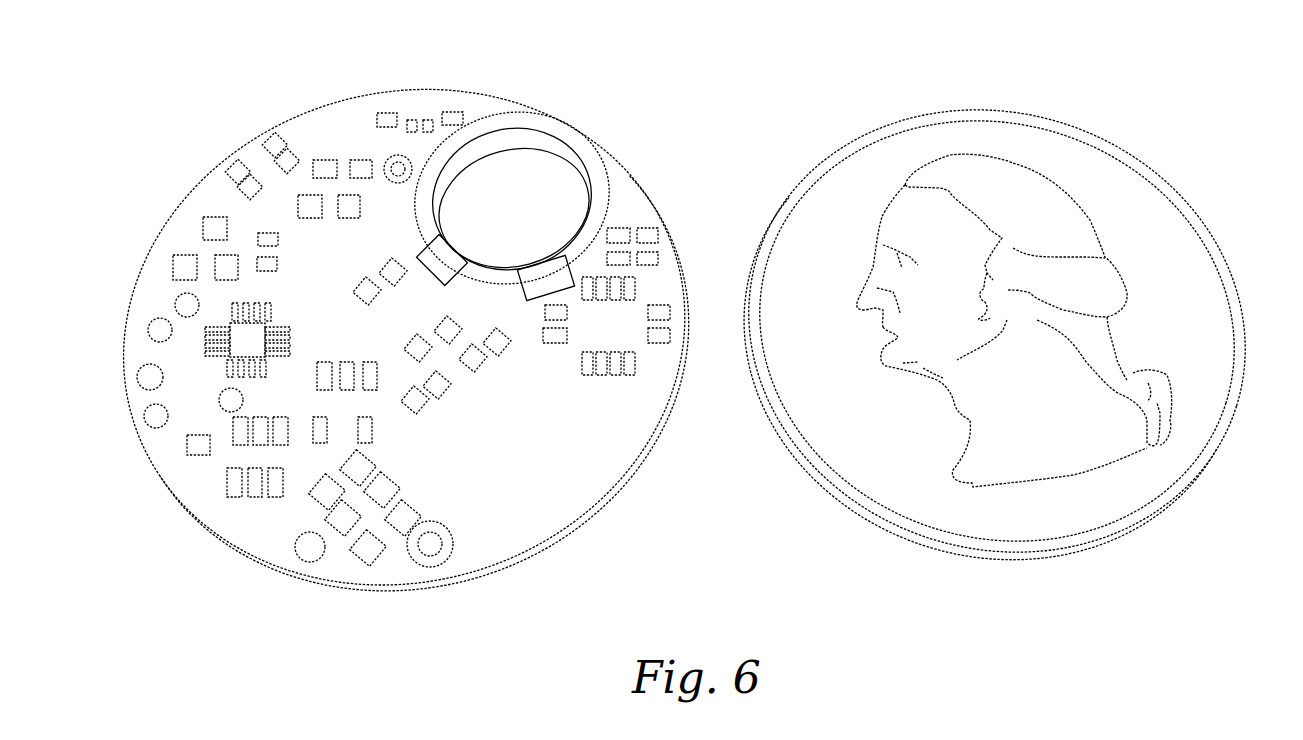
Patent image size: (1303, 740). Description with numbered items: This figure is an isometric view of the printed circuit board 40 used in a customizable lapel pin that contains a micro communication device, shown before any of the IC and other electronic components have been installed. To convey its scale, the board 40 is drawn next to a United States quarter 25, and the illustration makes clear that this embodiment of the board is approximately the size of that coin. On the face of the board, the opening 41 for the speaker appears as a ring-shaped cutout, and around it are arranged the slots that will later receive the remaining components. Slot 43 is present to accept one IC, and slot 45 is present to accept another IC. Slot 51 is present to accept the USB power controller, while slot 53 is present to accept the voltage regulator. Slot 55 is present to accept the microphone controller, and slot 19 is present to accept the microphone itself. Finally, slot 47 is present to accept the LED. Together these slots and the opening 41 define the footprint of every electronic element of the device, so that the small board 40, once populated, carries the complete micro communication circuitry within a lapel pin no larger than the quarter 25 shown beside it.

The printed circuit board 40 is at (580, 47).
The slot 47 is at (418, 113).
The slot 19 is at (262, 160).
The slot 55 is at (217, 233).
The slot 45 is at (243, 333).
The slot 53 is at (252, 487).
The slot 51 is at (368, 518).
The opening 41 is at (563, 175).
The slot 43 is at (613, 338).
The United States quarter 25 is at (1160, 250).